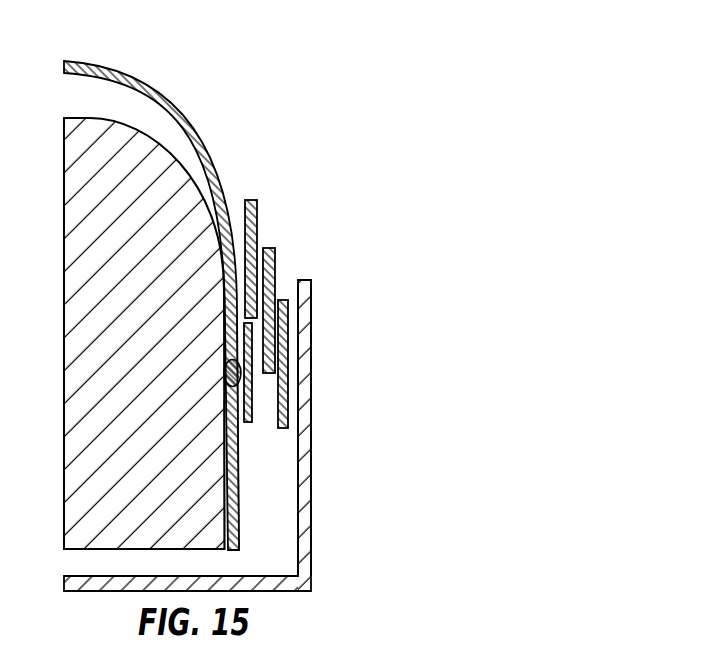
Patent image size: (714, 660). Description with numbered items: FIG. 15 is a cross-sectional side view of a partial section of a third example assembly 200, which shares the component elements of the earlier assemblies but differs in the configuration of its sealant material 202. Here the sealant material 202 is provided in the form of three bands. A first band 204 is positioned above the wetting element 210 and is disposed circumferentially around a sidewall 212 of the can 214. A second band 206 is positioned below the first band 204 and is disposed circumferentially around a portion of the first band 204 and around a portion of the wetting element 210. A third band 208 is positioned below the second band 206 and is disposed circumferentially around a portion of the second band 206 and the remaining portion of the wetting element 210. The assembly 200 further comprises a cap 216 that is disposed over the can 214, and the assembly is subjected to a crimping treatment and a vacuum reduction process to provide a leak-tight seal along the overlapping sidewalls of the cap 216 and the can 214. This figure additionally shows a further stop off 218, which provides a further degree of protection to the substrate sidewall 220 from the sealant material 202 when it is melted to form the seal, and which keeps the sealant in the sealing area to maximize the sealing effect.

The third example assembly 200 is at (233, 310).
The sealant material 202 is at (320, 278).
The first band 204 is at (259, 214).
The second band 206 is at (276, 278).
The third band 208 is at (289, 323).
The wetting element 210 is at (252, 397).
The sidewall 212 is at (237, 272).
The can 214 is at (174, 96).
The cap 216 is at (313, 470).
The stop off 218 is at (239, 470).
The substrate sidewall 220 is at (225, 520).